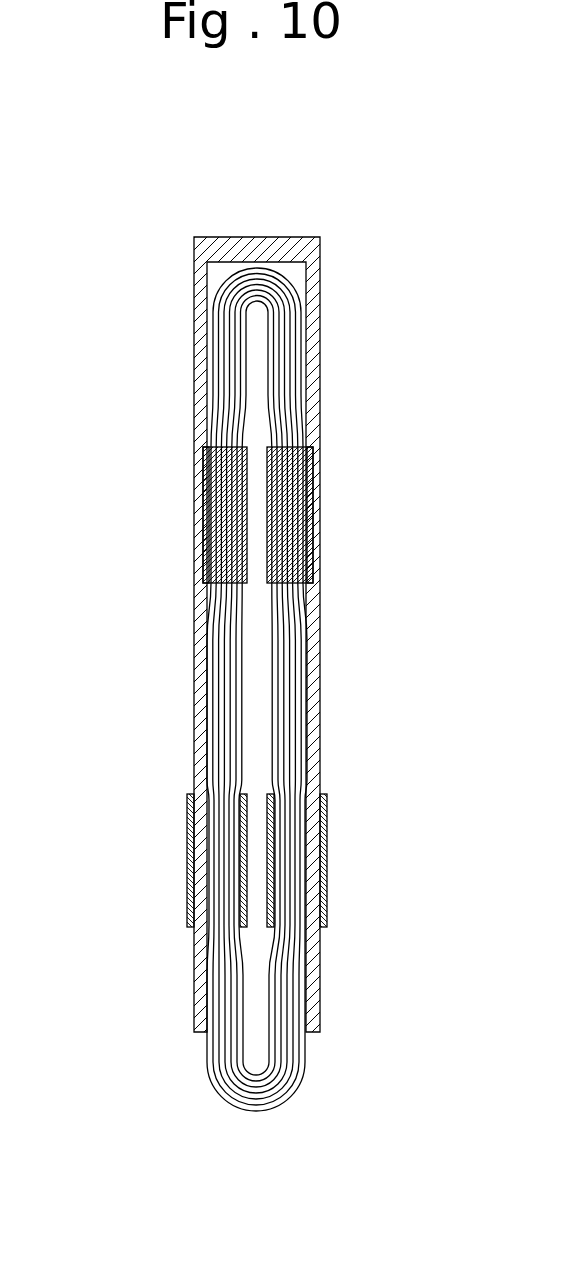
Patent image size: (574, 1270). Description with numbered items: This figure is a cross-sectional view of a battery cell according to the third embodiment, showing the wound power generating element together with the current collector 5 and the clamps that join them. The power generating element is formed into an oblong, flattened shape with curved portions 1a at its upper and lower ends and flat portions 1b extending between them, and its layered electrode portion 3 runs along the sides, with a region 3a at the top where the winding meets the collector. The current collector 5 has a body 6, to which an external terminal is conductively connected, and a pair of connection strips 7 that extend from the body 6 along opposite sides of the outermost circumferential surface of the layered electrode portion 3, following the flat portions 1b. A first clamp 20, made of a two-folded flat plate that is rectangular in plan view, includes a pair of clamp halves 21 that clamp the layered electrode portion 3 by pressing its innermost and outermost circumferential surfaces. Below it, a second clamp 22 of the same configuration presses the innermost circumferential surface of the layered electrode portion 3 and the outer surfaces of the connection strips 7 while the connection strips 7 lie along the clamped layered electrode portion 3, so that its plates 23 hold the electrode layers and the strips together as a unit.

The curved portion 1a is at (253, 1112).
The flat portion 1b is at (210, 694).
The layered electrode portion 3 is at (257, 681).
The end portion of electrode body 3a is at (255, 261).
The current collector 5 is at (258, 570).
The body 6 is at (284, 247).
The connection strip 7 is at (195, 387).
The first clamp 20 is at (257, 498).
The clamp half 21 is at (207, 540).
The second clamp 22 is at (256, 853).
The spacer plate 23 is at (240, 873).